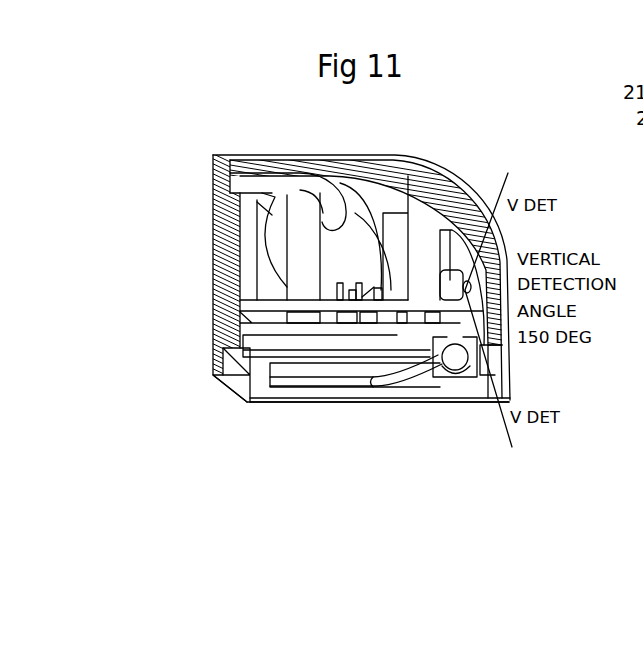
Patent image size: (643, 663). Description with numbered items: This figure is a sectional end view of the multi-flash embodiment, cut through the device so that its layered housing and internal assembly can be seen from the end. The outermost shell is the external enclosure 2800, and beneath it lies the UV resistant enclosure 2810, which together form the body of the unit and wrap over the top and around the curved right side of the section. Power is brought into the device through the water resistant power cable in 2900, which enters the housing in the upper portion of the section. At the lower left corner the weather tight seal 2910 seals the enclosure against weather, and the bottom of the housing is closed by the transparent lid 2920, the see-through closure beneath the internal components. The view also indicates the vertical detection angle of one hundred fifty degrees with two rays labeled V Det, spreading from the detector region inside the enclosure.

The external enclosure 2800 is at (405, 170).
The UV resistant enclosure 2810 is at (423, 183).
The water resistant power cable in 2900 is at (333, 223).
The weather tight seal 2910 is at (232, 380).
The transparent lid 2920 is at (322, 395).